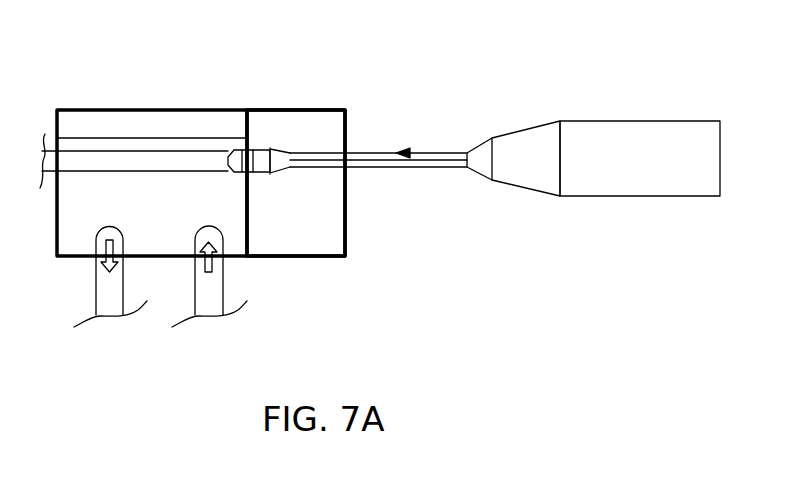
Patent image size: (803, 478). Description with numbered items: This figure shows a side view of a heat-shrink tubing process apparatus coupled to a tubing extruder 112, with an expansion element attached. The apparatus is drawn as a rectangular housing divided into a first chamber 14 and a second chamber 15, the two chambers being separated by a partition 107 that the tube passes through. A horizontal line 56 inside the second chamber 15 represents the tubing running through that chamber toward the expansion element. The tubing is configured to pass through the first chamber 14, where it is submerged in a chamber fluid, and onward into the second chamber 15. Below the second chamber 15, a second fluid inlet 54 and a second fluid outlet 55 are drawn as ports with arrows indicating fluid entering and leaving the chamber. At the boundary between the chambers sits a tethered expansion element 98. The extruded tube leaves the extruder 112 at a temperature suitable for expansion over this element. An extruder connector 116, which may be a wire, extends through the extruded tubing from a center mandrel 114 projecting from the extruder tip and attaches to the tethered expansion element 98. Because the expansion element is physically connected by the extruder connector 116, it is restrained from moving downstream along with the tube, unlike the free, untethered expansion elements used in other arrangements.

The second chamber 15 is at (108, 118).
The sample channel 56 is at (175, 125).
The tethered expansion element 98 is at (262, 152).
The first chamber 14 is at (330, 120).
The extruder connector 116 is at (401, 148).
The center mandrel 114 is at (470, 148).
The extruder 112 is at (600, 120).
The dividing wall 107 is at (252, 205).
The second fluid outlet 55 is at (115, 296).
The second fluid inlet 54 is at (212, 297).